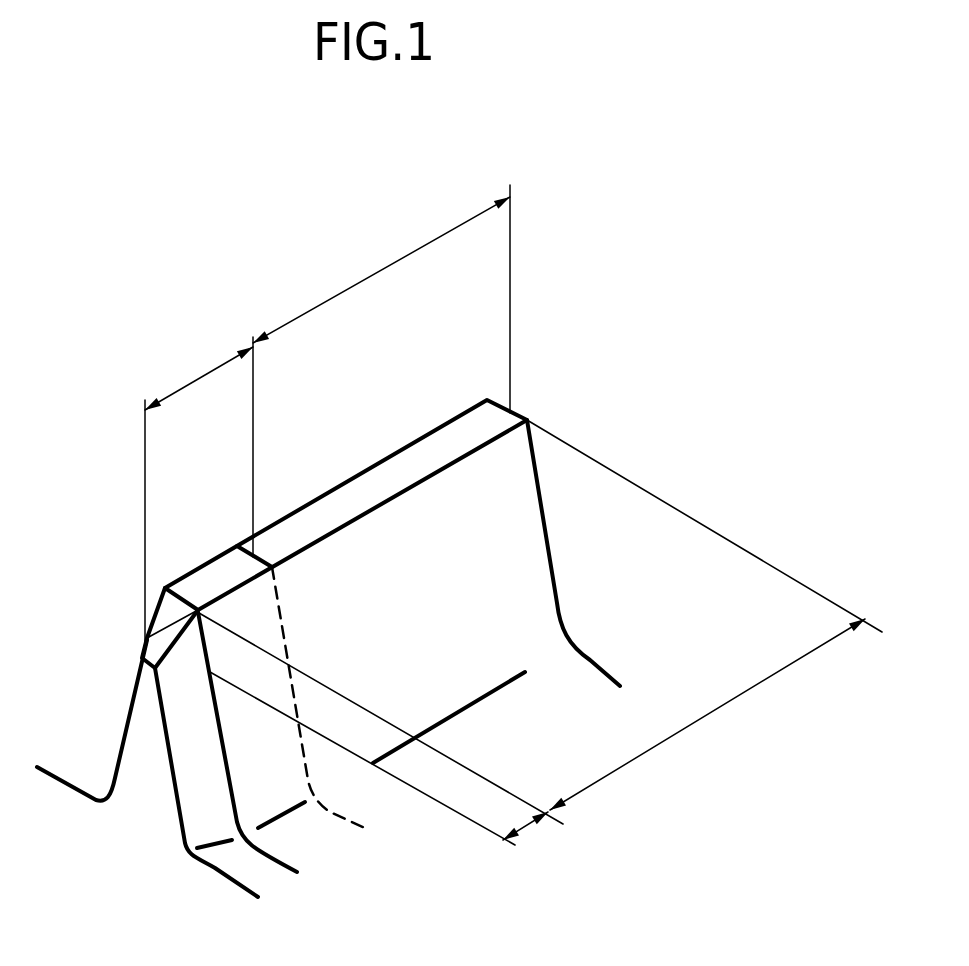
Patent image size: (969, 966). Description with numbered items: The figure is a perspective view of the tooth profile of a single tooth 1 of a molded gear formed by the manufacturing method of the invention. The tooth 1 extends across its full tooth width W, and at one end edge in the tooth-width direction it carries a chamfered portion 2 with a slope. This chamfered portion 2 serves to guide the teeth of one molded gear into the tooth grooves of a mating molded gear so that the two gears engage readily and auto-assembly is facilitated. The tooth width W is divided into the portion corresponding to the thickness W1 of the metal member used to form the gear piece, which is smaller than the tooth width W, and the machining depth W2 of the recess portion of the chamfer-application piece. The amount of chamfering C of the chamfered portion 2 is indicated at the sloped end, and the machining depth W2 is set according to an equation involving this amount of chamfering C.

The tooth 1 is at (527, 420).
The chamfered portion 2 is at (202, 792).
The thickness W1 is at (381, 270).
The machining depth W2 is at (199, 378).
The tooth width W is at (707, 714).
The amount of chamfering C is at (525, 831).